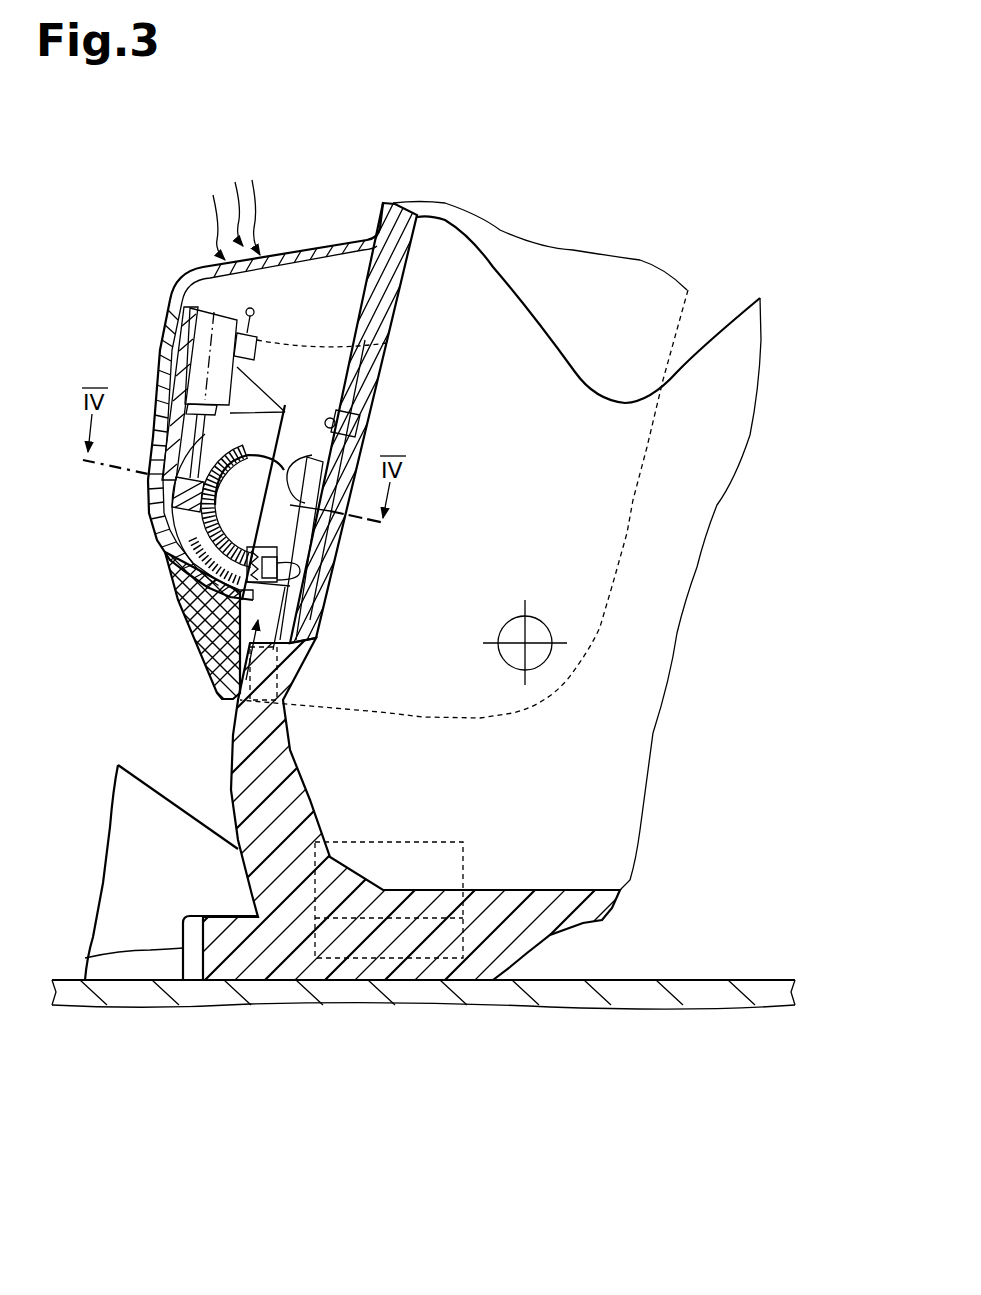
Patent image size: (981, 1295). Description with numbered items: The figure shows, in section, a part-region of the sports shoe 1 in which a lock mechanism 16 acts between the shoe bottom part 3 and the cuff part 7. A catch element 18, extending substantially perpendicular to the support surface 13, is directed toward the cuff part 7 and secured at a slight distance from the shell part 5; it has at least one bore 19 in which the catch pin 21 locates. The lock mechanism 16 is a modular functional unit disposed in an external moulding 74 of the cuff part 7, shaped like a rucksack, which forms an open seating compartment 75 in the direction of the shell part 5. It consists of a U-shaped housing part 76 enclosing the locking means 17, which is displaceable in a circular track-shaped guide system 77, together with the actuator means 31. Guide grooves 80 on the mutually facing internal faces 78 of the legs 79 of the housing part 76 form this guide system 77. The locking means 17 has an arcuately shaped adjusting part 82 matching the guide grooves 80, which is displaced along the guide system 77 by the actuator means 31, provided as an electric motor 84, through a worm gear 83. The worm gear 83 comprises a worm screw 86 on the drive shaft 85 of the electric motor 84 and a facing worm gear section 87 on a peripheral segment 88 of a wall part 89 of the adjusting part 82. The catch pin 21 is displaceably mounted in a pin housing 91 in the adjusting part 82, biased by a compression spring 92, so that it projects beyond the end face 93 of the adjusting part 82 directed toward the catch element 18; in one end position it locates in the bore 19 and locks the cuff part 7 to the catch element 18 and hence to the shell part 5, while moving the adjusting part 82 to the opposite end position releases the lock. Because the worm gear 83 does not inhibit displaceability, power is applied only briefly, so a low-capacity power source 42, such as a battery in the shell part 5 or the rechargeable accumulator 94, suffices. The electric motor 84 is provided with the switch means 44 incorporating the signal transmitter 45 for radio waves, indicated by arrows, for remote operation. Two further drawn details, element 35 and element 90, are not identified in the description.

The sports shoe 1 is at (745, 226).
The shoe bottom part 3 is at (735, 362).
The shell part 5 is at (232, 520).
The cuff part 7 is at (213, 267).
The support surface 13 is at (392, 984).
The lock mechanism 16 is at (332, 330).
The locking means 17 is at (200, 582).
The catch element 18 is at (325, 461).
The bore 19 is at (305, 590).
The catch pin 21 is at (302, 573).
The actuator means 31 is at (307, 297).
The fastener 35 is at (345, 468).
The power source 42 is at (490, 953).
The switch means 44 is at (255, 348).
The signal transmitter 45 is at (387, 343).
The external moulding 74 is at (145, 298).
The seating compartment 75 is at (236, 300).
The housing part 76 is at (163, 347).
The guide system 77 is at (287, 442).
The internal faces 78 is at (350, 400).
The legs 79 is at (337, 415).
The guide grooves 80 is at (300, 428).
The adjusting part 82 is at (193, 562).
The worm gear 83 is at (168, 498).
The electric motor 84 is at (195, 342).
The drive shaft 85 is at (197, 432).
The worm screw 86 is at (158, 517).
The worm gear section 87 is at (198, 538).
The peripheral segment 88 is at (278, 562).
The wall part 89 is at (228, 495).
The lower trim 90 is at (226, 650).
The pin housing 91 is at (240, 648).
The compression spring 92 is at (233, 592).
The end face 93 is at (313, 638).
The rechargeable accumulator 94 is at (360, 943).